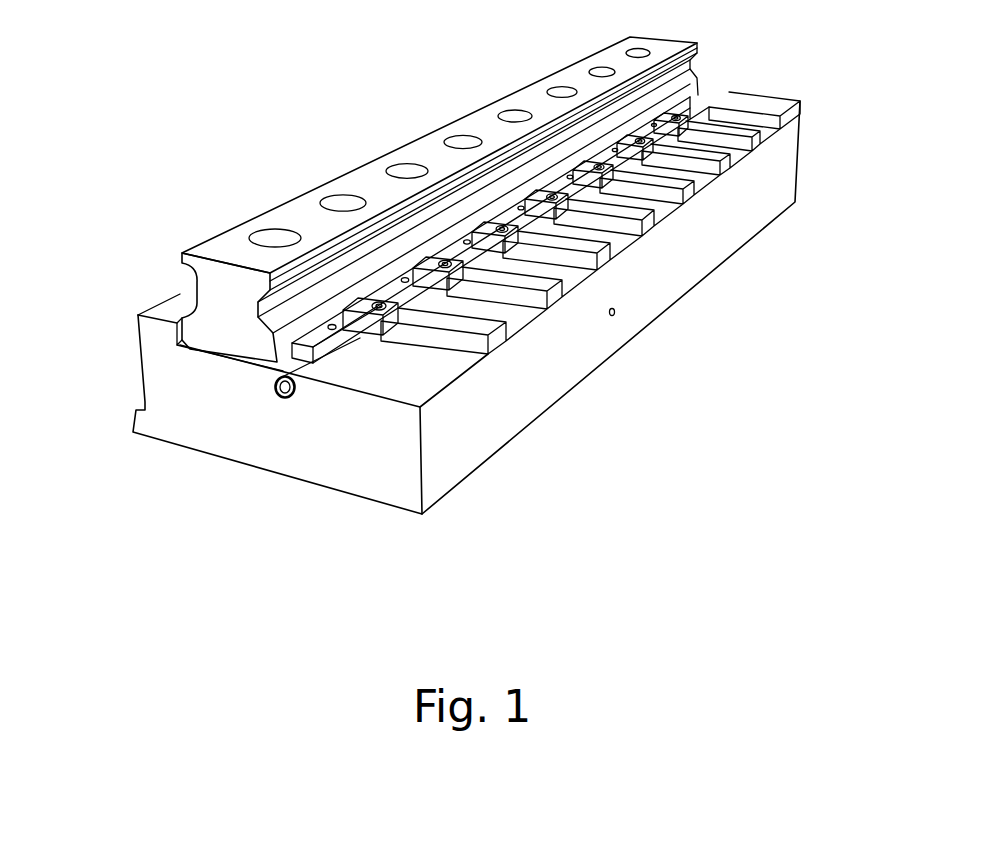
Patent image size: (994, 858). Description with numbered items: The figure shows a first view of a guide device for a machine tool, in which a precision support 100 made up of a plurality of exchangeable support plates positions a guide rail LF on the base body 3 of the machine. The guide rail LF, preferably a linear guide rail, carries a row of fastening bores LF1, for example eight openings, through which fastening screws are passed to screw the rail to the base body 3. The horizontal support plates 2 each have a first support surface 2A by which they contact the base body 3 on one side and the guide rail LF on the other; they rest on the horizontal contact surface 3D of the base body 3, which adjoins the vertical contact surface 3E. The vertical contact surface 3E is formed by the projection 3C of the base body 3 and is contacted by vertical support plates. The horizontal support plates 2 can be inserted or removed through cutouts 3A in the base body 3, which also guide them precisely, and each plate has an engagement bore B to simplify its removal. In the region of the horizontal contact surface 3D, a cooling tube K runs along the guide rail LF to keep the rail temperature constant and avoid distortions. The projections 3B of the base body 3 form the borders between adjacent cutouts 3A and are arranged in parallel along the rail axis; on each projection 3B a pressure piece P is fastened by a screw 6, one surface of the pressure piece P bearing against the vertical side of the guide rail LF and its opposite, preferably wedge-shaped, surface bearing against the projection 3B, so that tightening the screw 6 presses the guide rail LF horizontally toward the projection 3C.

The precision support 100 is at (718, 86).
The guide rail LF is at (220, 279).
The fastening bores LF1 is at (270, 236).
The first support surface 2A is at (277, 232).
The pressure piece P is at (345, 322).
The screw 6 is at (396, 300).
The base body 3 is at (290, 450).
The cutouts 3A is at (420, 377).
The projections 3B is at (473, 343).
The projection 3C is at (148, 327).
The vertical contact surface 3E is at (177, 335).
The horizontal contact surface 3D is at (180, 348).
The cooling tube K is at (277, 387).
The horizontal support plates 2 is at (318, 345).
The engagement bore B is at (345, 340).